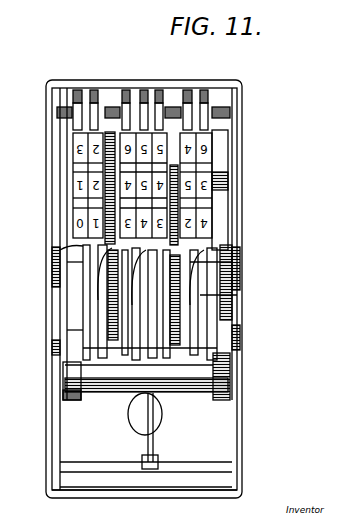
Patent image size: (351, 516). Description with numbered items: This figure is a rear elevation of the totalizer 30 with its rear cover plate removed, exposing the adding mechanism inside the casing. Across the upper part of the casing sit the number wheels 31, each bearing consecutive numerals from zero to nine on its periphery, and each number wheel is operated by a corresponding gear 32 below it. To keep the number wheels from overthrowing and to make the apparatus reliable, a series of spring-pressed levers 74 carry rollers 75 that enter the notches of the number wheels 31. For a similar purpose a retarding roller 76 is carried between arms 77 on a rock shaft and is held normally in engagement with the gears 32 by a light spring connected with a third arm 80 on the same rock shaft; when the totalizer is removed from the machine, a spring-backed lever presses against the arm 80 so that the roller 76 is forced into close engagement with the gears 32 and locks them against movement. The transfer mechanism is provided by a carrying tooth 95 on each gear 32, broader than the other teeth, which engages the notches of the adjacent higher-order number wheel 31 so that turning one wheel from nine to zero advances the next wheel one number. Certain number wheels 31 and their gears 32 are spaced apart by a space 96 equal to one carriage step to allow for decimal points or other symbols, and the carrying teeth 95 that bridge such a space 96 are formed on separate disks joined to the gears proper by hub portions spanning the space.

The space 96 is at (108, 113).
The spring-pressed levers 74 is at (72, 103).
The rollers 75 is at (57, 118).
The totalizer 30 is at (60, 158).
The number wheels 31 is at (212, 163).
The gears 32 is at (236, 268).
The carrying tooth 95 is at (236, 296).
The arms 77 is at (80, 382).
The retarding roller 76 is at (105, 395).
The third arm 80 is at (153, 436).